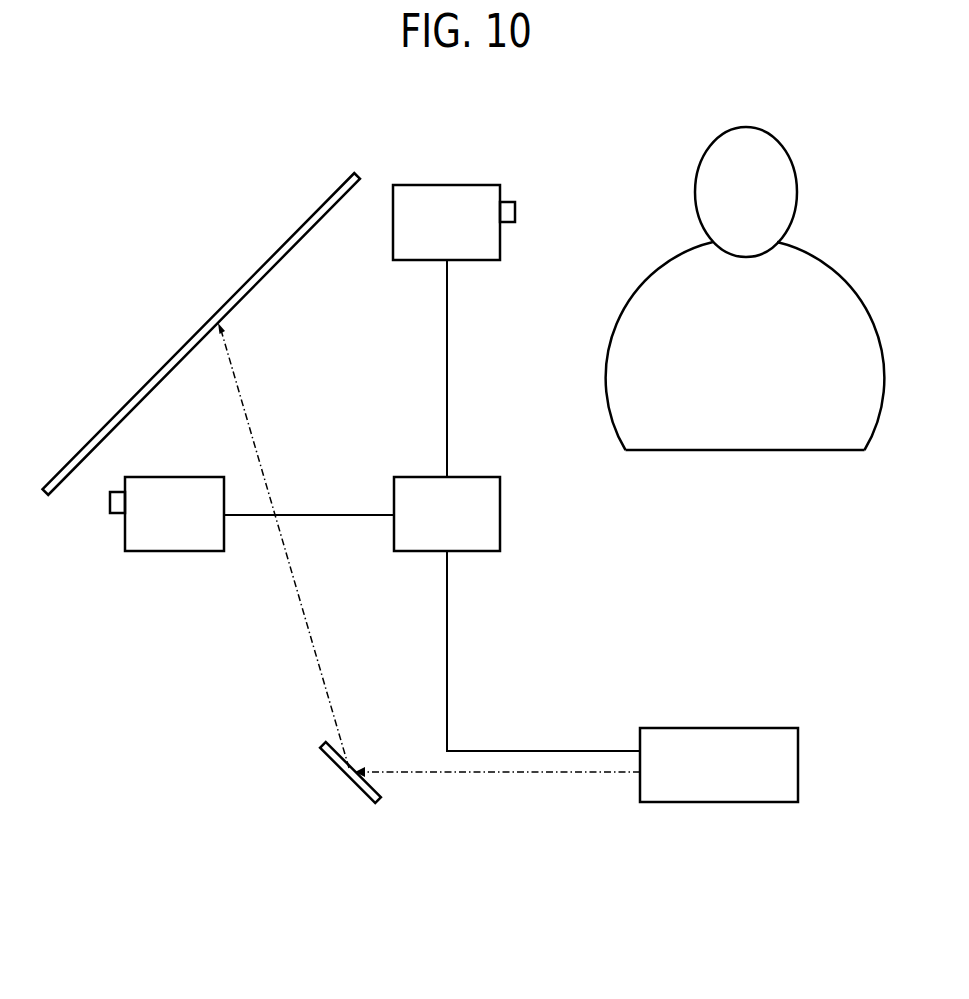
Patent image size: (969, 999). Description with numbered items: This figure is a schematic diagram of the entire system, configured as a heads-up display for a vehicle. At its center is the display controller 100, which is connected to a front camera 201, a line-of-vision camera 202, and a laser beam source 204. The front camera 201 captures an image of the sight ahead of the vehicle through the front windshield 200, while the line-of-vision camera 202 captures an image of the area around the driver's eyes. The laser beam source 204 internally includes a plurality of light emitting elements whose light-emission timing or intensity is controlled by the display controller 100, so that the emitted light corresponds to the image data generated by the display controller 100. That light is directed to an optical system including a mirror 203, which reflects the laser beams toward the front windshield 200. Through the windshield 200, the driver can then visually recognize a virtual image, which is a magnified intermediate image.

The display controller 100 is at (500, 490).
The front windshield 200 is at (316, 212).
The front camera 201 is at (207, 551).
The line-of-vision camera 202 is at (503, 247).
The mirror 203 is at (347, 777).
The laser beam source 204 is at (800, 742).